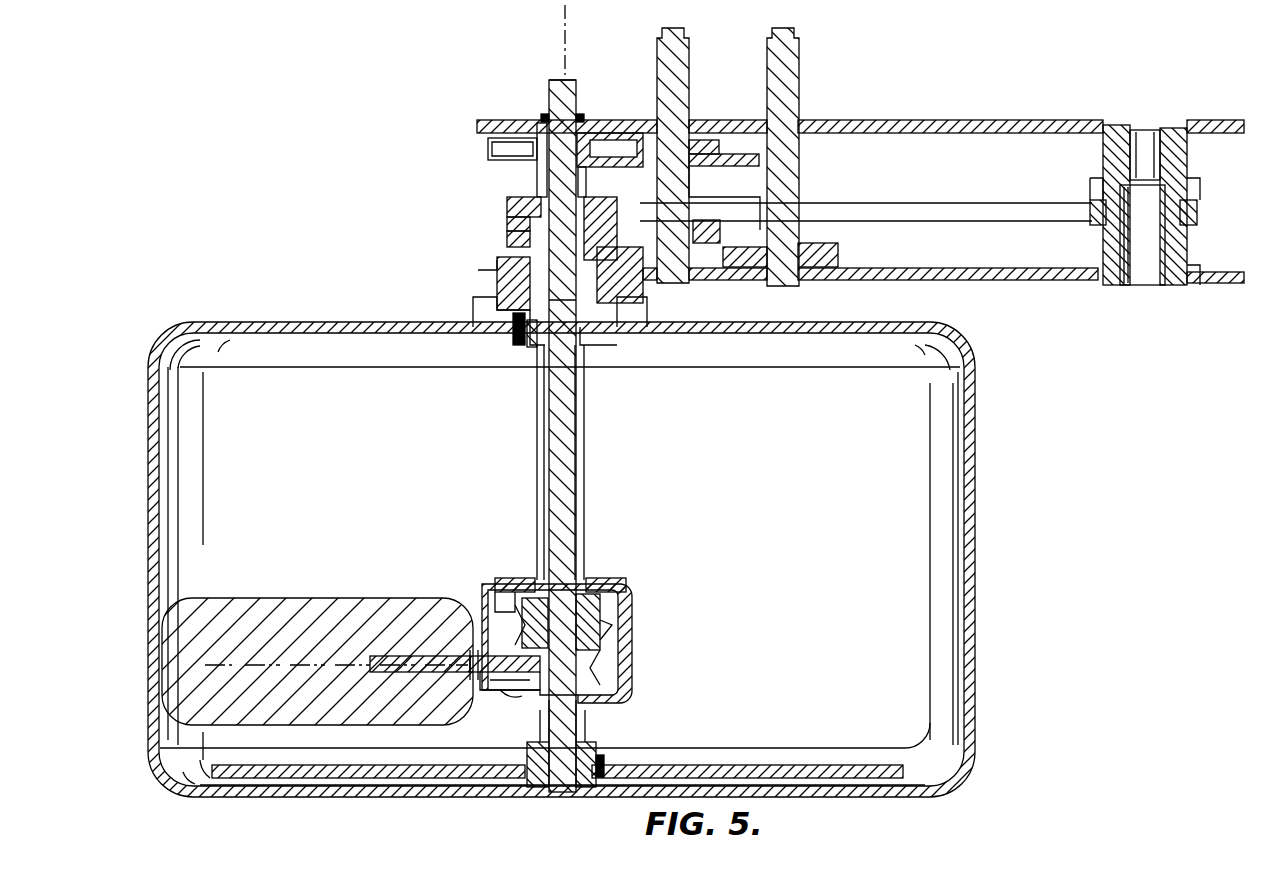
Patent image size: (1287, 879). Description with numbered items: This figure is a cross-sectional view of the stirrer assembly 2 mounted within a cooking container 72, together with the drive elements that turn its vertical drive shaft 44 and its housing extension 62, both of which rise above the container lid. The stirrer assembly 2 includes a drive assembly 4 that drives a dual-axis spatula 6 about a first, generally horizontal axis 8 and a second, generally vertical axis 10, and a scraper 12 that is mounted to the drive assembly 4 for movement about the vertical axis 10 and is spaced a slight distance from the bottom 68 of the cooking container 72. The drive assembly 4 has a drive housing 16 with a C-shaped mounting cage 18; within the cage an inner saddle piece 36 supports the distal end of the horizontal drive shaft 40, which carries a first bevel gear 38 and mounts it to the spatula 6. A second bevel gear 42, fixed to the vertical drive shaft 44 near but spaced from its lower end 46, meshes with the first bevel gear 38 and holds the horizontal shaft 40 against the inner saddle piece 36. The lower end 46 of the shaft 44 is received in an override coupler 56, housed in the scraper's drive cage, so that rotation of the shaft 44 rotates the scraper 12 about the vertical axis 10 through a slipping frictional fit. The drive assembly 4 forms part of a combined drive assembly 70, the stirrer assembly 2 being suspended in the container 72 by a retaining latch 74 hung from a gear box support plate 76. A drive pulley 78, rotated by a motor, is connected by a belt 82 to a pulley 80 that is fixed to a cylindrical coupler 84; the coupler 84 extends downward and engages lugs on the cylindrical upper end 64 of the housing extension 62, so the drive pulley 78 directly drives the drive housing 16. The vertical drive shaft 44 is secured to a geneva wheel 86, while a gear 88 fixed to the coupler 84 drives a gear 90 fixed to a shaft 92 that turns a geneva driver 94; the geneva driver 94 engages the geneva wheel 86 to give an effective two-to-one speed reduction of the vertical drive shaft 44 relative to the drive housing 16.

The stirrer assembly 2 is at (750, 447).
The drive assembly 4 is at (623, 423).
The spatula 6 is at (285, 597).
The first horizontal axis 8 is at (232, 660).
The second vertical axis 10 is at (566, 20).
The scraper 12 is at (738, 758).
The drive housing 16 is at (630, 590).
The mounting cage 18 is at (495, 580).
The inner saddle piece 36 is at (590, 680).
The first bevel gear 38 is at (530, 698).
The drive shaft 40 is at (450, 612).
The second bevel gear 42 is at (600, 625).
The vertical drive shaft 44 is at (545, 95).
The lower end 46 is at (560, 750).
The override coupler 56 is at (598, 778).
The housing extension 62 is at (590, 460).
The cylindrical upper end 64 is at (512, 332).
The bottom 68 is at (790, 797).
The combined drive assembly 70 is at (425, 110).
The cooking container 72 is at (977, 493).
The retaining latch 74 is at (579, 118).
The gear box support plate 76 is at (1010, 125).
The drive pulley 78 is at (1197, 190).
The pulley 80 is at (508, 210).
The belt 82 is at (950, 200).
The cylindrical coupler 84 is at (508, 222).
The geneva wheel 86 is at (488, 150).
The gear 88 is at (508, 236).
The gear 90 is at (717, 240).
The shaft 92 is at (675, 32).
The geneva driver 94 is at (700, 165).